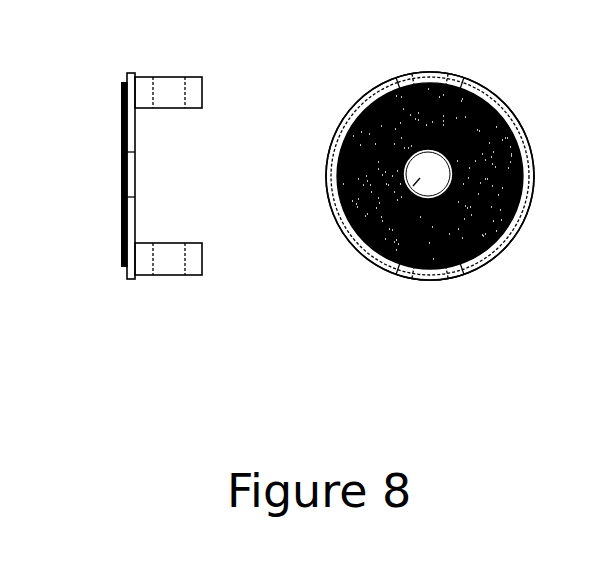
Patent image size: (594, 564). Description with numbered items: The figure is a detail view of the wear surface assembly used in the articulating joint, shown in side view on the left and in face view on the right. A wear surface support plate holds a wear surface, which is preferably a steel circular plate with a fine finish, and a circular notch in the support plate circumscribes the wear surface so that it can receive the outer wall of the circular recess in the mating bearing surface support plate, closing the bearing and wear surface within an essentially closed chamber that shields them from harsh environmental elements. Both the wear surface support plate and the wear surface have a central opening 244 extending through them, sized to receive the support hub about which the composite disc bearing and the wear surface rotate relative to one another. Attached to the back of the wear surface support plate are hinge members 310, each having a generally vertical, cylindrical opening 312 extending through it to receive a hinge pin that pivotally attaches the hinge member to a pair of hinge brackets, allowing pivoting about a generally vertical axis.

The central opening 244 is at (356, 246).
The hinge members 310 is at (194, 77).
The cylindrical opening 312 is at (172, 100).